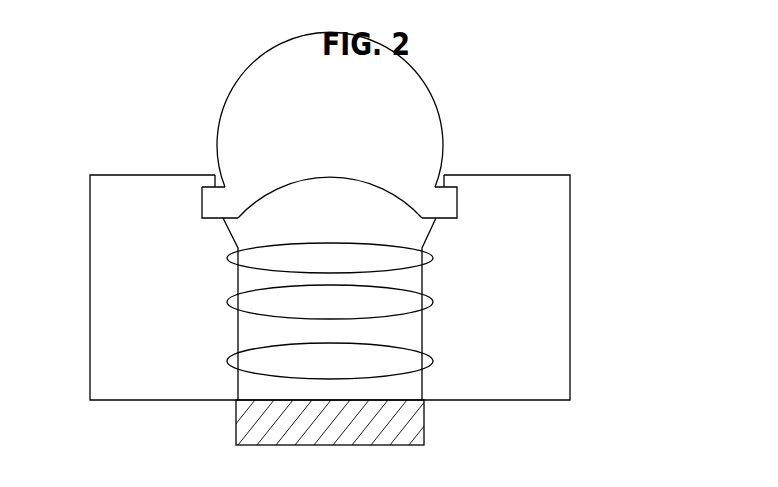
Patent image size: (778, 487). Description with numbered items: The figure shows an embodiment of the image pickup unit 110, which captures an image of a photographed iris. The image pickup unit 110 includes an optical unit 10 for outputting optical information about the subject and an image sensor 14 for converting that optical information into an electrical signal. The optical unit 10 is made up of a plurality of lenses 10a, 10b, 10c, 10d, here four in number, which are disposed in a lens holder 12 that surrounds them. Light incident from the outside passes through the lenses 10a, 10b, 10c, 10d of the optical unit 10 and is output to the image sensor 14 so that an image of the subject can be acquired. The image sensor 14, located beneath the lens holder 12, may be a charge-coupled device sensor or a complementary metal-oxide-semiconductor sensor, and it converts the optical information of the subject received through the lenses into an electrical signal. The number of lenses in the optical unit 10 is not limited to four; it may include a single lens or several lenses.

The image pickup unit 110 is at (88, 123).
The lens holder 12 is at (103, 285).
The optical unit 10 is at (441, 216).
The lens 10a is at (393, 158).
The lens 10b is at (393, 262).
The lens 10c is at (393, 303).
The lens 10d is at (425, 361).
The image sensor 14 is at (410, 428).